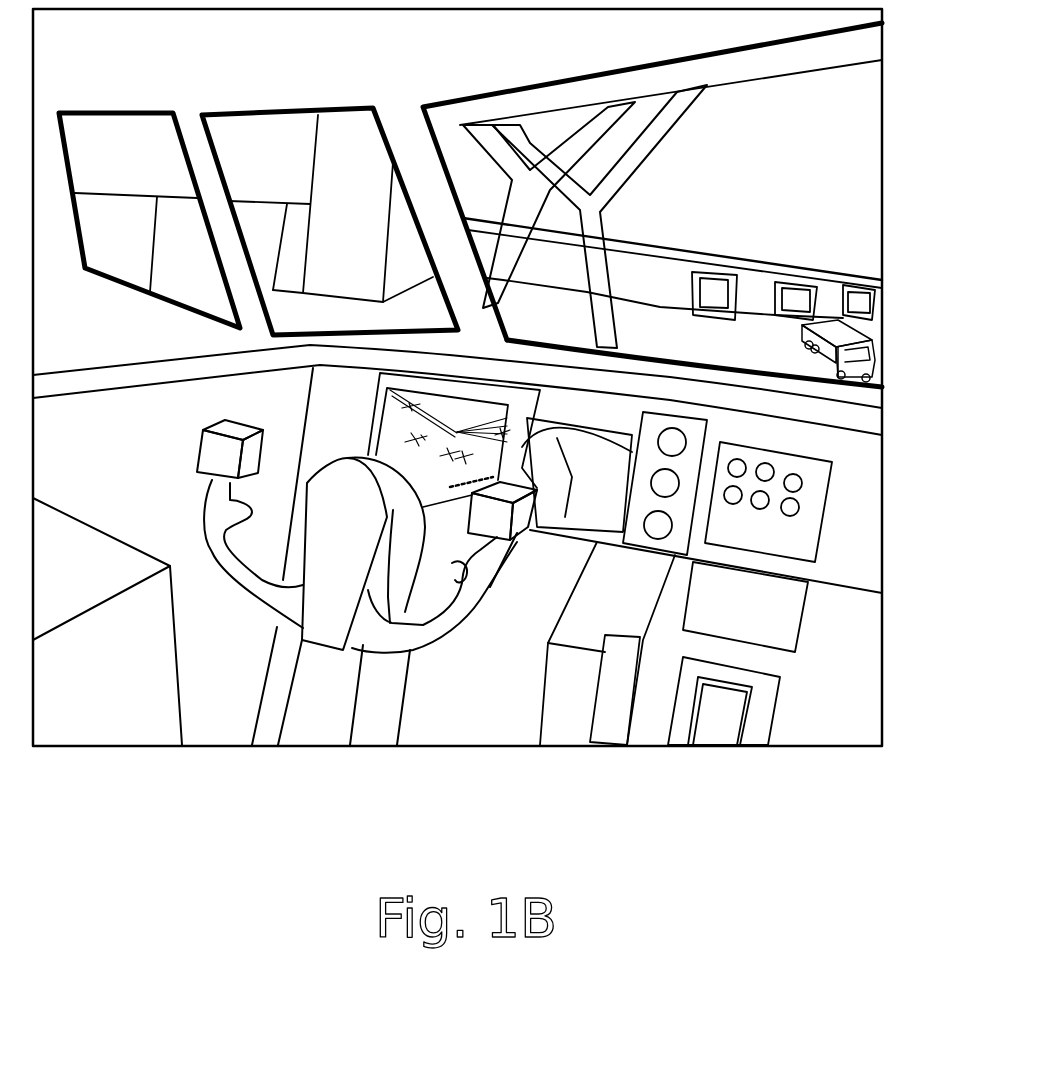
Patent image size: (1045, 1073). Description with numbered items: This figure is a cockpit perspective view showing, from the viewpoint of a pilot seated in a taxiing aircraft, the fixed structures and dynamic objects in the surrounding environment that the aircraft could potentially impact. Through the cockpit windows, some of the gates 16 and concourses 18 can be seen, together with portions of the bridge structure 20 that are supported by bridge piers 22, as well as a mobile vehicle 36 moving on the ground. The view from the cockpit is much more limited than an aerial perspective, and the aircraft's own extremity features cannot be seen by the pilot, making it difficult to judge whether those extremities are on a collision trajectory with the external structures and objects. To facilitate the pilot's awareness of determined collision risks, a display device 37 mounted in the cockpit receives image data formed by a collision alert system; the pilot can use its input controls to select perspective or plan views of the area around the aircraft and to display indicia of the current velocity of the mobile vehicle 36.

The gates 16 is at (798, 300).
The concourses 18 is at (857, 270).
The bridge structure 20 is at (808, 65).
The bridge piers 22 is at (575, 148).
The mobile vehicle 36 is at (892, 354).
The display device 37 is at (393, 435).